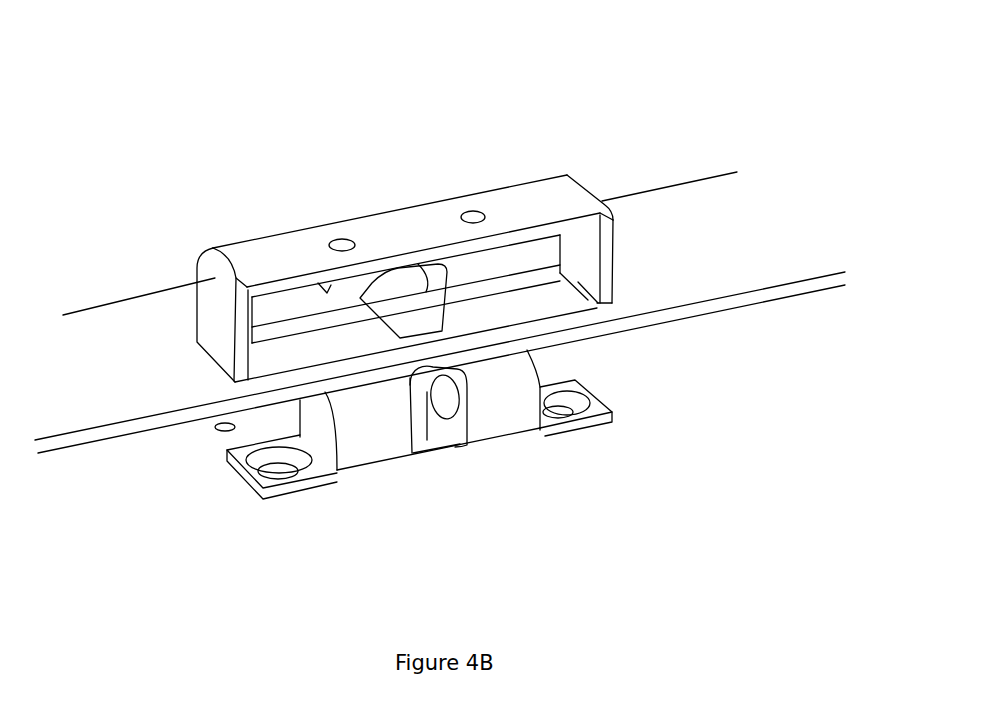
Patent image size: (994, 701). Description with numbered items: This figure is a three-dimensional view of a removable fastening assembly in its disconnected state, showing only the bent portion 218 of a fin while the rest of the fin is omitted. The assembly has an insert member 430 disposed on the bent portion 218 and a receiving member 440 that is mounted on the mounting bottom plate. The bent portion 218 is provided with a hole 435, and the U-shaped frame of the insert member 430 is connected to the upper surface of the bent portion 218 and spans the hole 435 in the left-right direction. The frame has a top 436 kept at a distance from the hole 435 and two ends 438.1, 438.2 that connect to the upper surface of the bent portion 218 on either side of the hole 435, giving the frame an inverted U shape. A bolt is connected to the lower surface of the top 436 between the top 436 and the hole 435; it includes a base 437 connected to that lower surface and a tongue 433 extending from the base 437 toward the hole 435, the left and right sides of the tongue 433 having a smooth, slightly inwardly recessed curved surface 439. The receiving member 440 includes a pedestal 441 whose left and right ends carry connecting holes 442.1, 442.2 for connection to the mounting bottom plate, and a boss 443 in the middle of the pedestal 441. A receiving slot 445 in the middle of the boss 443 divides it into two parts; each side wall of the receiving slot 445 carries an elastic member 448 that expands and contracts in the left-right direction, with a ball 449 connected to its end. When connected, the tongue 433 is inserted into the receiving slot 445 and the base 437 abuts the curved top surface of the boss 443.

The bent portion 218 is at (90, 327).
The insert member 430 is at (613, 145).
The tongue 433 is at (427, 288).
The hole 435 is at (288, 357).
The top 436 is at (540, 195).
The base 437 is at (362, 296).
The end 438.1 is at (193, 342).
The end 438.2 is at (578, 277).
The smooth curved surface 439 is at (478, 268).
The receiving member 440 is at (191, 500).
The pedestal 441 is at (320, 477).
The connecting hole 442.1 is at (273, 497).
The connecting hole 442.2 is at (573, 432).
The boss 443 is at (363, 473).
The receiving slot 445 is at (432, 442).
The elastic member 448 is at (447, 400).
The ball 449 is at (440, 436).